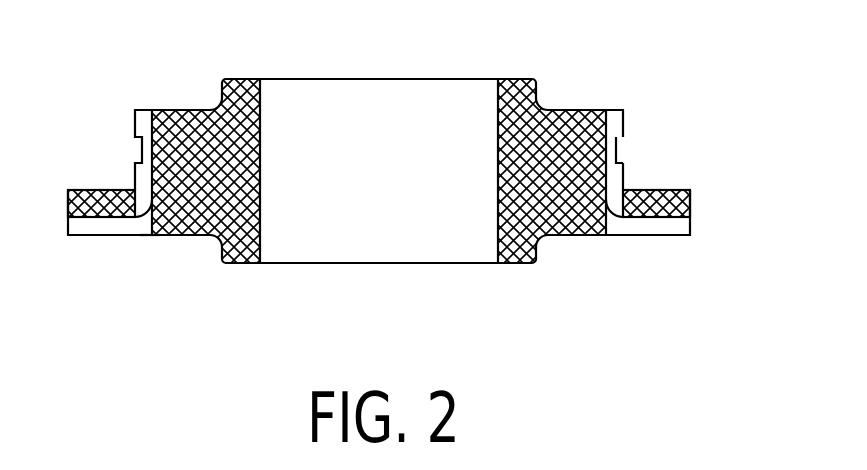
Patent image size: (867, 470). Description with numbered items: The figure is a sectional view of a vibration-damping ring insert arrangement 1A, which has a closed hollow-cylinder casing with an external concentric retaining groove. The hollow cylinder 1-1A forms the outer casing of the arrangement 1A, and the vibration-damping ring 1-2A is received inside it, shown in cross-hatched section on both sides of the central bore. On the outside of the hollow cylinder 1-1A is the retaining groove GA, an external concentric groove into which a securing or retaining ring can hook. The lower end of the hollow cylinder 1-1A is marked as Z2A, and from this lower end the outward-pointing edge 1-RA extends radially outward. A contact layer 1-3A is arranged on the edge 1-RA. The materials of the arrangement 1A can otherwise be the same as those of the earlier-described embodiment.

The vibration-damping ring insert arrangement 1A is at (427, 170).
The hollow cylinder 1-1A is at (389, 166).
The vibration-damping ring 1-2A is at (568, 232).
The contact layer 1-3A is at (692, 198).
The edge 1-RA is at (652, 227).
The retaining groove GA is at (623, 148).
The lower end of the hollow cylinder Z2A is at (135, 280).